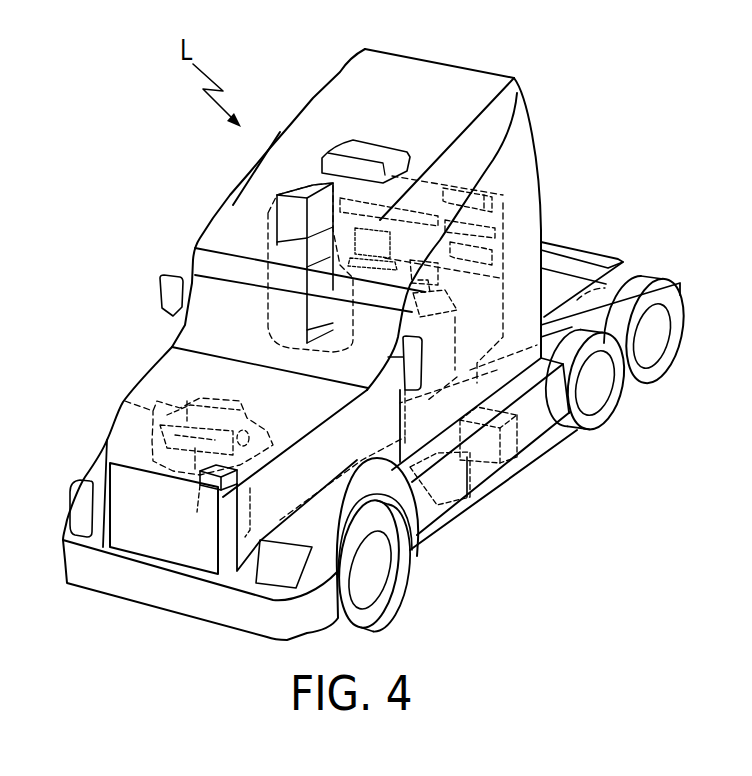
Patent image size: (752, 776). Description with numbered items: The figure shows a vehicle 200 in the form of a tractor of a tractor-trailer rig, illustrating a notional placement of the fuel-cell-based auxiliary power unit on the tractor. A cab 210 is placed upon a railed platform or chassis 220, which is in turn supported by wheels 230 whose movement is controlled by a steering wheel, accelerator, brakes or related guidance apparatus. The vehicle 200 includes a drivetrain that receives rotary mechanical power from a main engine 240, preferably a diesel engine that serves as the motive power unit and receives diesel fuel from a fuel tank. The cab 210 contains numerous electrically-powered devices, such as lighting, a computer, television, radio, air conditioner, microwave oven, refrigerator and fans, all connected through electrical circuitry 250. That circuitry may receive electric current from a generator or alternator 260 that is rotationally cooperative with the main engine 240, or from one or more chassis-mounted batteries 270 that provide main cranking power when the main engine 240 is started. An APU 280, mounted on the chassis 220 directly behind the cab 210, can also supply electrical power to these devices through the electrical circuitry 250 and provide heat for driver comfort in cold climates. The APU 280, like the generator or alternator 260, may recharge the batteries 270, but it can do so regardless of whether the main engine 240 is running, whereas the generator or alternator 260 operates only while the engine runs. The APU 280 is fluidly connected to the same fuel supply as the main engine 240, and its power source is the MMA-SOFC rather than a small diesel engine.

The vehicle 200 is at (585, 118).
The cab 210 is at (192, 328).
The chassis 220 is at (584, 258).
The wheels 230 is at (647, 377).
The main engine 240 is at (125, 401).
The electrical circuitry 250 is at (505, 204).
The generator or alternator 260 is at (205, 488).
The chassis-mounted batteries 270 is at (443, 501).
The APU 280 is at (516, 443).